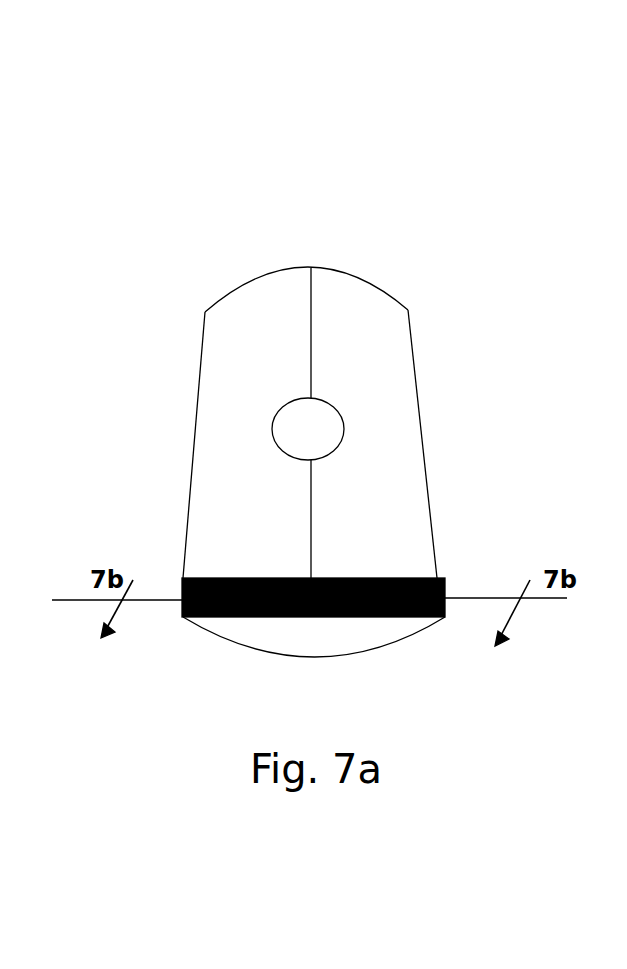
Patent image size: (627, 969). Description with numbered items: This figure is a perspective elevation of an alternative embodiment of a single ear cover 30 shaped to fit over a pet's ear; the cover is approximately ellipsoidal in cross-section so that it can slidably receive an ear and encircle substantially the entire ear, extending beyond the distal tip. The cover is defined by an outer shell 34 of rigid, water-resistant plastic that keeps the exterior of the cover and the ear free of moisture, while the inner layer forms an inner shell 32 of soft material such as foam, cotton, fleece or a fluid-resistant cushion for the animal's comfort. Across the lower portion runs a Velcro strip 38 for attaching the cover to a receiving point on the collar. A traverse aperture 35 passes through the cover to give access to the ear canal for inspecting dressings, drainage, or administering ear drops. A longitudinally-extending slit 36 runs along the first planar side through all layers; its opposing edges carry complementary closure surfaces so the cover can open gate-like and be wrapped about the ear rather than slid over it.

The ear cover 30 is at (340, 489).
The inner shell 32 is at (233, 625).
The outer shell 34 is at (215, 498).
The traverse aperture 35 is at (338, 403).
The longitudinally-extending slit 36 is at (322, 310).
The Velcro strip 38 is at (398, 577).